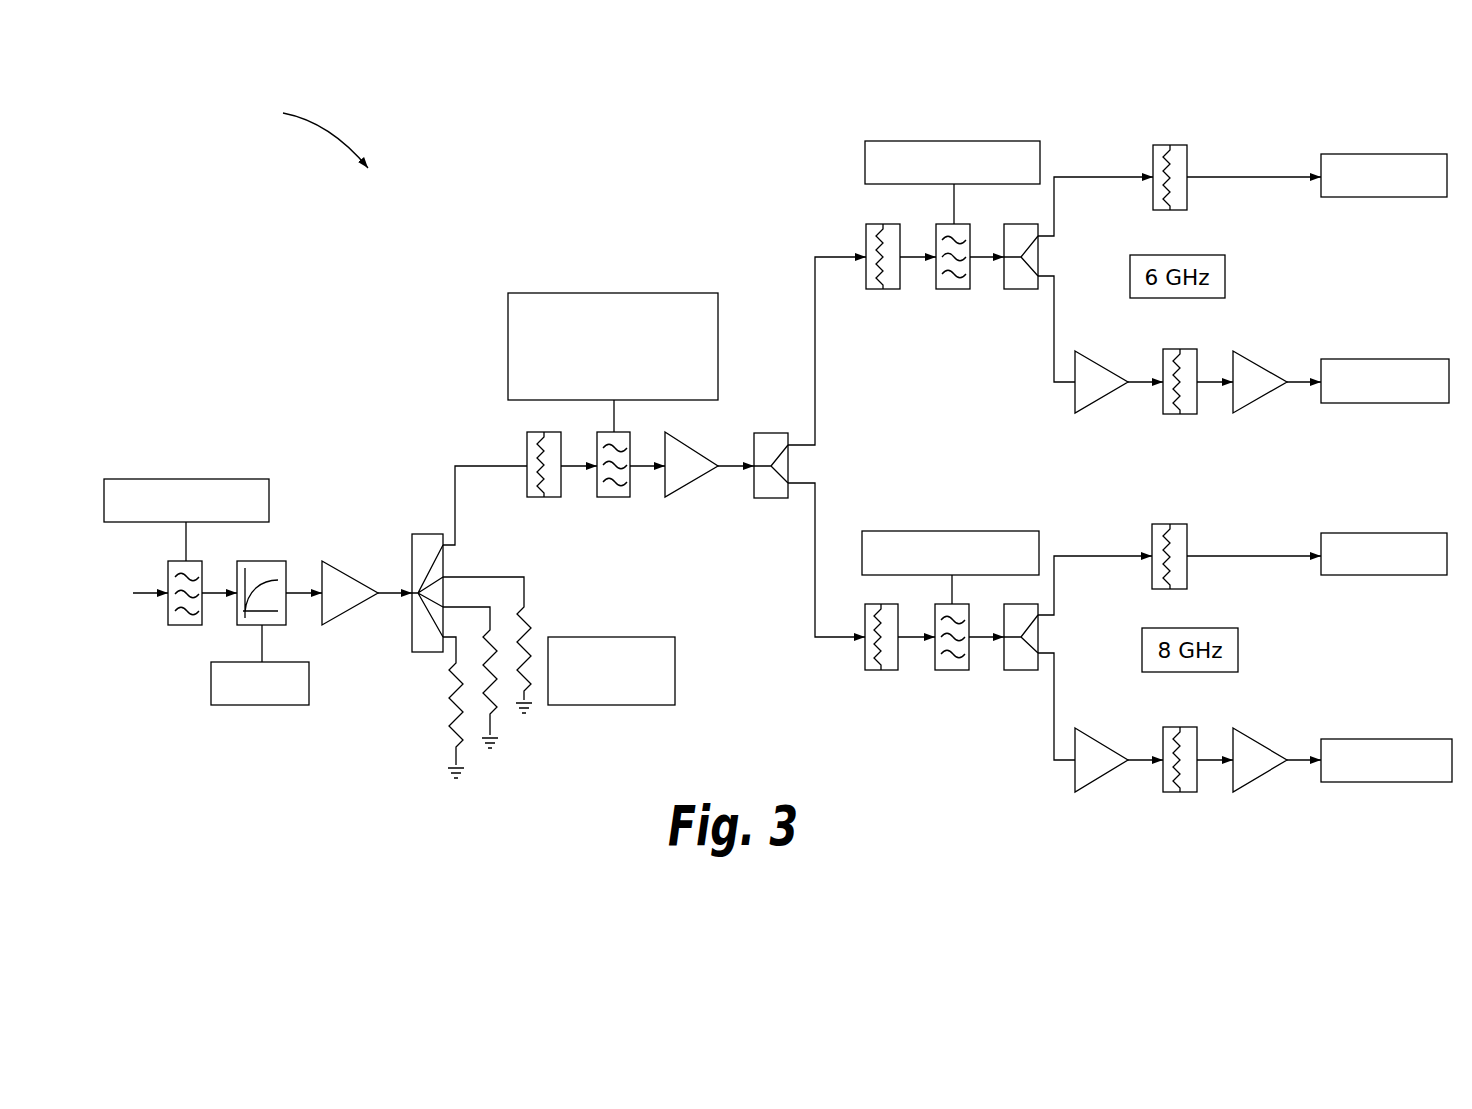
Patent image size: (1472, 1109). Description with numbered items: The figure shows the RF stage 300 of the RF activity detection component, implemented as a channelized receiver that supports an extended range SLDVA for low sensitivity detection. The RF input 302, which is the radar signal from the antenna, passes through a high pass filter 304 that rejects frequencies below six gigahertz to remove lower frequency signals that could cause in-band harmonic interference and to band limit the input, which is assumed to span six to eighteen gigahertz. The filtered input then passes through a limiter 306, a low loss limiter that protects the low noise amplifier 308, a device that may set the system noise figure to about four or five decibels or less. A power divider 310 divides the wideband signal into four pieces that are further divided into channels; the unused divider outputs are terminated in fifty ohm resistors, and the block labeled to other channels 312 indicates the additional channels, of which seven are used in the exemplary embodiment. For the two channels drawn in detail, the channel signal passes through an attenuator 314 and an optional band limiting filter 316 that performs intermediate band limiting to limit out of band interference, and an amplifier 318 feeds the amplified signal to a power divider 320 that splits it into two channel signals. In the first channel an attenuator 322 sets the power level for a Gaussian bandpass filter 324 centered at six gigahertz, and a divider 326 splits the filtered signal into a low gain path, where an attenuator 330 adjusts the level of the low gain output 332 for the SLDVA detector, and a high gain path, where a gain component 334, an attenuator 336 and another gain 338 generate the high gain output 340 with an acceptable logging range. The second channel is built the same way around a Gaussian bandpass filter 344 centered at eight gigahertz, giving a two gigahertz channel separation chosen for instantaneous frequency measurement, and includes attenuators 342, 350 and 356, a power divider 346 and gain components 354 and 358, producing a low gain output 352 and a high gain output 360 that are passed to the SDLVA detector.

The RF stage 300 is at (303, 137).
The RF input 302 is at (103, 627).
The high pass filter 304 is at (208, 479).
The limiter 306 is at (262, 705).
The low noise amplifier 308 is at (345, 575).
The power divider 310 is at (425, 652).
The termination resistors / other channels 312 is at (608, 705).
The attenuator 314 is at (527, 440).
The optional band limiting filter 316 is at (637, 293).
The amplifier 318 is at (700, 462).
The power divider 320 is at (778, 433).
The attenuator 322 is at (866, 240).
The Gaussian bandpass filter 324 is at (963, 141).
The divider 326 is at (1020, 290).
The attenuator 330 is at (1166, 145).
The low gain output 332 is at (1366, 154).
The gain component 334 is at (1097, 358).
The attenuator 336 is at (1185, 349).
The gain 338 is at (1265, 358).
The high gain output 340 is at (1375, 359).
The attenuator 342 is at (862, 660).
The Gaussian bandpass filter 344 is at (950, 531).
The power divider 346 is at (1020, 670).
The attenuator 350 is at (1167, 524).
The low gain output 352 is at (1360, 533).
The gain component 354 is at (1072, 778).
The attenuator 356 is at (1175, 727).
The gain component 358 is at (1258, 740).
The high gain output 360 is at (1360, 782).